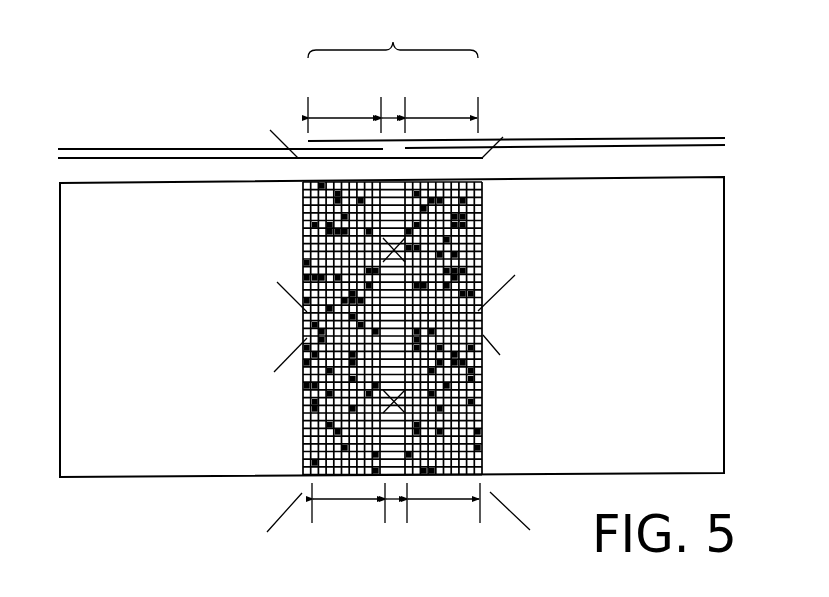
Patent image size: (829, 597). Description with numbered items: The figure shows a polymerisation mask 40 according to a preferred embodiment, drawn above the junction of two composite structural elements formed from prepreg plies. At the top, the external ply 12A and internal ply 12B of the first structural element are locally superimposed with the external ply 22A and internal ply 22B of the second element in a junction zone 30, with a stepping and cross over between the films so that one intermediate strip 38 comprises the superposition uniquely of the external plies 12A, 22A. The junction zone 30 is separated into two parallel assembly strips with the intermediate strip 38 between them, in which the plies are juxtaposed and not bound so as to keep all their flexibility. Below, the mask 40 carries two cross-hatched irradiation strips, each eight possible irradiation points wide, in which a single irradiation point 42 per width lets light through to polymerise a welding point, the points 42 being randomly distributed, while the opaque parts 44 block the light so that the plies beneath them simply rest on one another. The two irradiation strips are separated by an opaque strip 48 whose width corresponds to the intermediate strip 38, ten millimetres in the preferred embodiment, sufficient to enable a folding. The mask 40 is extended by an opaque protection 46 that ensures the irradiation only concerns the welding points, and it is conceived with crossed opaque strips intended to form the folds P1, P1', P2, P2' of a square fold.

The polymerisation mask 40 is at (740, 433).
The opaque protection 46 is at (712, 367).
The irradiation parts 42 is at (432, 328).
The opaque parts 44 is at (483, 308).
The external ply of the first structural element 12A is at (268, 128).
The internal ply of the first structural element 12B is at (95, 149).
The external ply of the second structural element 22A is at (521, 118).
The internal ply of the second structural element 22B is at (688, 138).
The junction zone 30 is at (393, 35).
The intermediate strip 38 is at (392, 91).
The opaque strip 48 is at (393, 526).
The fold P1 is at (245, 285).
The fold P2 is at (245, 357).
The fold P1' is at (353, 130).
The fold P2' is at (346, 514).